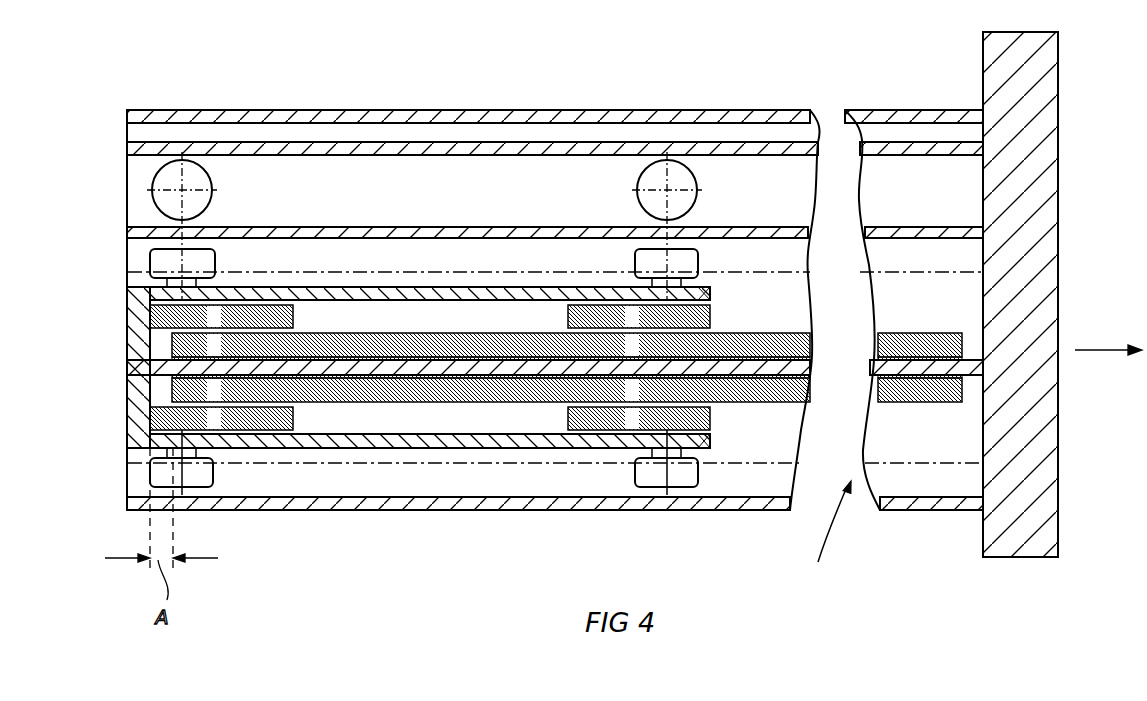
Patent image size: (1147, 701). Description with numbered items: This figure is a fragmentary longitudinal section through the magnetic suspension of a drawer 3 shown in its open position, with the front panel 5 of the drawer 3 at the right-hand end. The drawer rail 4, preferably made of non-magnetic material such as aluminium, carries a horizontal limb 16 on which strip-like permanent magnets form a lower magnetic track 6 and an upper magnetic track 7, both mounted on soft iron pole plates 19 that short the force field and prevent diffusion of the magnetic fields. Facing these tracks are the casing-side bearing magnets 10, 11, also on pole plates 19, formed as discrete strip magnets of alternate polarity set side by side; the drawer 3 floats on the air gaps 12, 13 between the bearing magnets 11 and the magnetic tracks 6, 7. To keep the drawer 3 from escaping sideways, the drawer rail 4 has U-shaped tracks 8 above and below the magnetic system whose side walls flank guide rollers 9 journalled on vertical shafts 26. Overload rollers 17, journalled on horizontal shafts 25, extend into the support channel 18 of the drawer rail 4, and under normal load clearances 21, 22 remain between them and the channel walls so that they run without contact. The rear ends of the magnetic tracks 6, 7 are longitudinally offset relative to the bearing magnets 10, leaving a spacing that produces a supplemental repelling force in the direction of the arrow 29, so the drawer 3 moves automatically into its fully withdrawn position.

The drawer 3 is at (828, 536).
The drawer rail 4 is at (128, 220).
The front panel 5 is at (1045, 290).
The lower magnetic track 6 is at (172, 388).
The upper magnetic track 7 is at (172, 345).
The track 8 is at (418, 253).
The guide roller 9 is at (200, 263).
The bearing magnet 10 is at (150, 305).
The bearing magnet 11 is at (710, 305).
The air gap 12 is at (297, 330).
The air gap 13 is at (297, 410).
The limb 16 is at (455, 365).
The overload roller 17 is at (193, 175).
The support channel 18 is at (345, 195).
The pole plate 19 is at (388, 358).
The clearance 21 is at (650, 163).
The clearance 22 is at (647, 222).
The horizontal shaft 25 is at (182, 190).
The vertical shaft 26 is at (190, 272).
The arrow 29 is at (1108, 381).